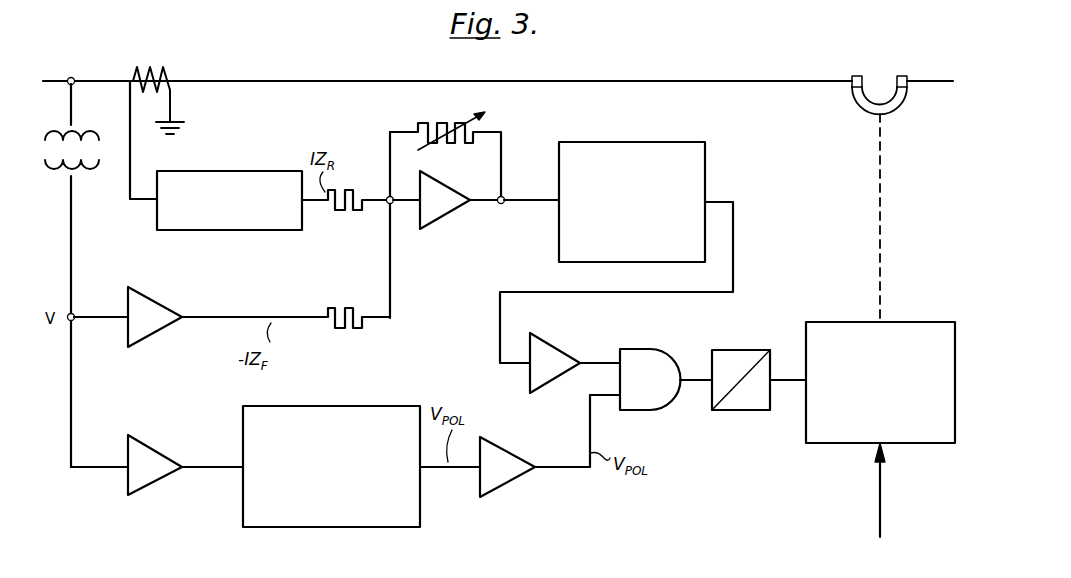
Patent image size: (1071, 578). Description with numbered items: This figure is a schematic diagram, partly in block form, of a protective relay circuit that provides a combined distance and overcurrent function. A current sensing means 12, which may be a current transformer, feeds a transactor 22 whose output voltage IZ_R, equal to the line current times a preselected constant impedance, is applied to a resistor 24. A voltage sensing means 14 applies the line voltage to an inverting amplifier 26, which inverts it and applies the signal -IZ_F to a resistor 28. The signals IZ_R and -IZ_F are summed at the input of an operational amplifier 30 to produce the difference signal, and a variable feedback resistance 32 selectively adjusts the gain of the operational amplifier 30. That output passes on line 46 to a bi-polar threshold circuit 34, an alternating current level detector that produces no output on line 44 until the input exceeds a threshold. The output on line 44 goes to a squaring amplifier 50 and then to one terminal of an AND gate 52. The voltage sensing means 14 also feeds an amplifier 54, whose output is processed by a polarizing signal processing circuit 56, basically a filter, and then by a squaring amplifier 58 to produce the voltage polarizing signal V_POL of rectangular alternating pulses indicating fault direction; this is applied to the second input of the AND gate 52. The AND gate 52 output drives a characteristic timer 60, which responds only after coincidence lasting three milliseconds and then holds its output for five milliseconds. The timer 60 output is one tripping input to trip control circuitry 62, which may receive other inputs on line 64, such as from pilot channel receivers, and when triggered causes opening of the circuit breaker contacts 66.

The current sensing means 12 is at (134, 70).
The voltage sensing means 14 is at (86, 157).
The transactor 22 is at (235, 171).
The resistor 24 is at (343, 212).
The inverting amplifier 26 is at (155, 330).
The resistor 28 is at (357, 330).
The operational amplifier 30 is at (445, 215).
The variable feedback resistance 32 is at (430, 122).
The bi-polar threshold circuit 34 is at (630, 142).
The output line 44 is at (735, 243).
The input line 46 is at (530, 200).
The squaring amplifier 50 is at (555, 350).
The AND gate 52 is at (655, 349).
The amplifier 54 is at (155, 483).
The polarizing signal processing circuit 56 is at (326, 527).
The squaring amplifier 58 is at (510, 485).
The characteristic timer 60 is at (742, 350).
The trip control circuitry 62 is at (913, 322).
The line 64 is at (877, 510).
The circuit breaker contacts 66 is at (861, 108).